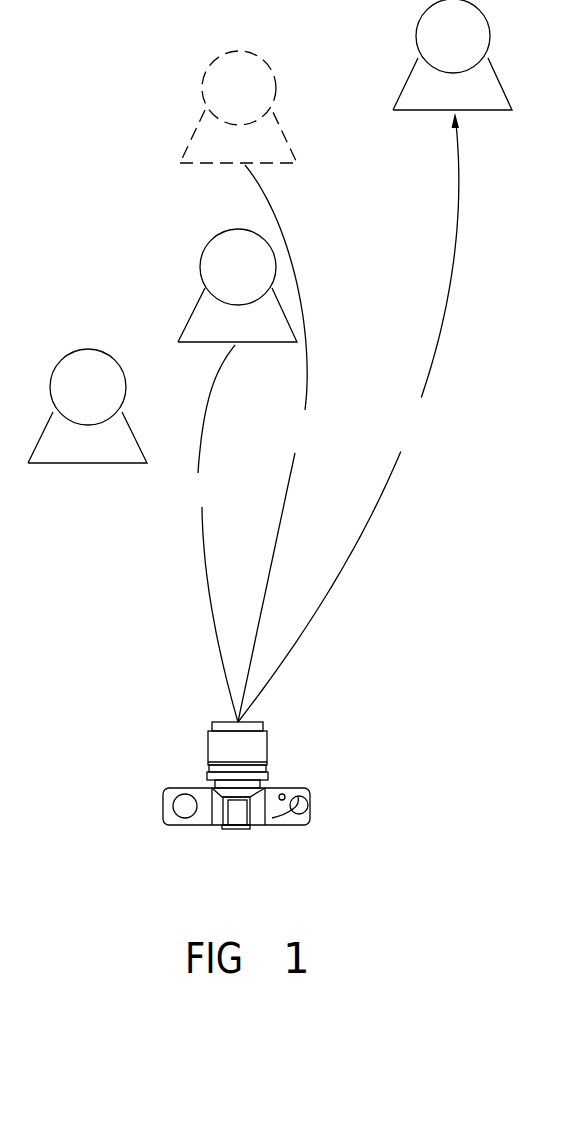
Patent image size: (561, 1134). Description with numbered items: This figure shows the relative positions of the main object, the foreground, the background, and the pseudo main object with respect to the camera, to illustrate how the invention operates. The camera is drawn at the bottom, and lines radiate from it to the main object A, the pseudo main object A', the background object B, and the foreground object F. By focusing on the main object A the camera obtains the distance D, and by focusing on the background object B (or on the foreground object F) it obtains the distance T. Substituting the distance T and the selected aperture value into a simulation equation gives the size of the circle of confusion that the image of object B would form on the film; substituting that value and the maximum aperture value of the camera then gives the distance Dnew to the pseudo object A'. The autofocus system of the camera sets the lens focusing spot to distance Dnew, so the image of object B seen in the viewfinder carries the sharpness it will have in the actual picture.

The main object A is at (237, 475).
The pseudo main object A' is at (238, 139).
The background object B is at (449, 125).
The foreground object F is at (96, 476).
The distance from the main object D is at (212, 533).
The distance from the pseudo object Dnew is at (285, 443).
The distance from the background object T is at (348, 417).
The element camera is at (236, 775).